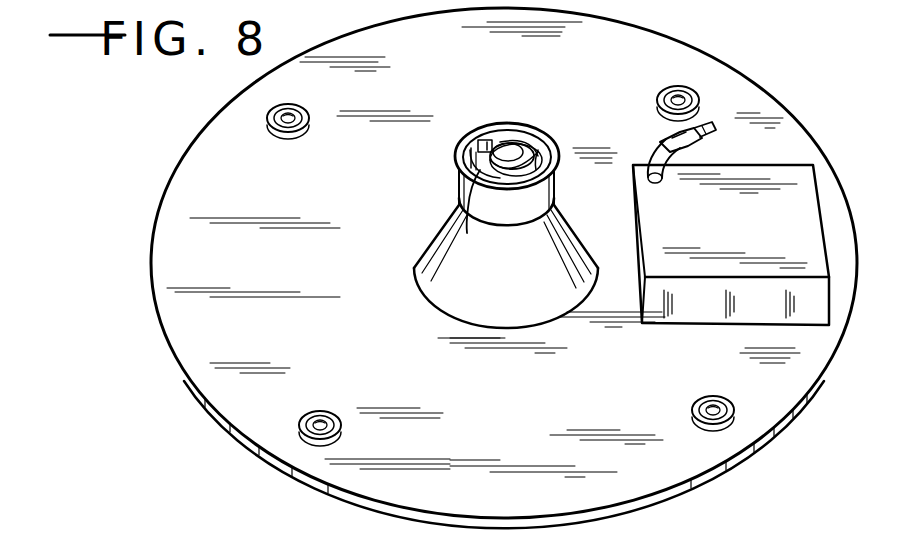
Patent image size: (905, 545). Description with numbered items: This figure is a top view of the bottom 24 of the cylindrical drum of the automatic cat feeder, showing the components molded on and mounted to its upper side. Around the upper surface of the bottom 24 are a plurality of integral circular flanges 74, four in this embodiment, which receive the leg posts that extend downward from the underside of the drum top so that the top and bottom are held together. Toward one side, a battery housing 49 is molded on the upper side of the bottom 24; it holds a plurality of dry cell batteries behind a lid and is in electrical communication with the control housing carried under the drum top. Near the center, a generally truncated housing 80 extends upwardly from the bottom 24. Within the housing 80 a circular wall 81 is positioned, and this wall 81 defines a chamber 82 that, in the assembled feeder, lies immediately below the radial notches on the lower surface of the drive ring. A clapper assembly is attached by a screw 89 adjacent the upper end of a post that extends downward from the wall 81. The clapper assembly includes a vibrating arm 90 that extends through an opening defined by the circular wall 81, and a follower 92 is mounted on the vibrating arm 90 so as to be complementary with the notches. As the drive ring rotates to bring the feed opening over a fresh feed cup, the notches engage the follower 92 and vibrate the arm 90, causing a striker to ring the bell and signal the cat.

The bottom 24 is at (522, 415).
The integral circular flanges 74 is at (277, 135).
The truncated housing 80 is at (544, 284).
The circular wall 81 is at (538, 155).
The chamber 82 is at (498, 140).
The screw 89 is at (463, 218).
The vibrating arm 90 is at (462, 155).
The follower 92 is at (487, 142).
The battery housing 49 is at (746, 232).